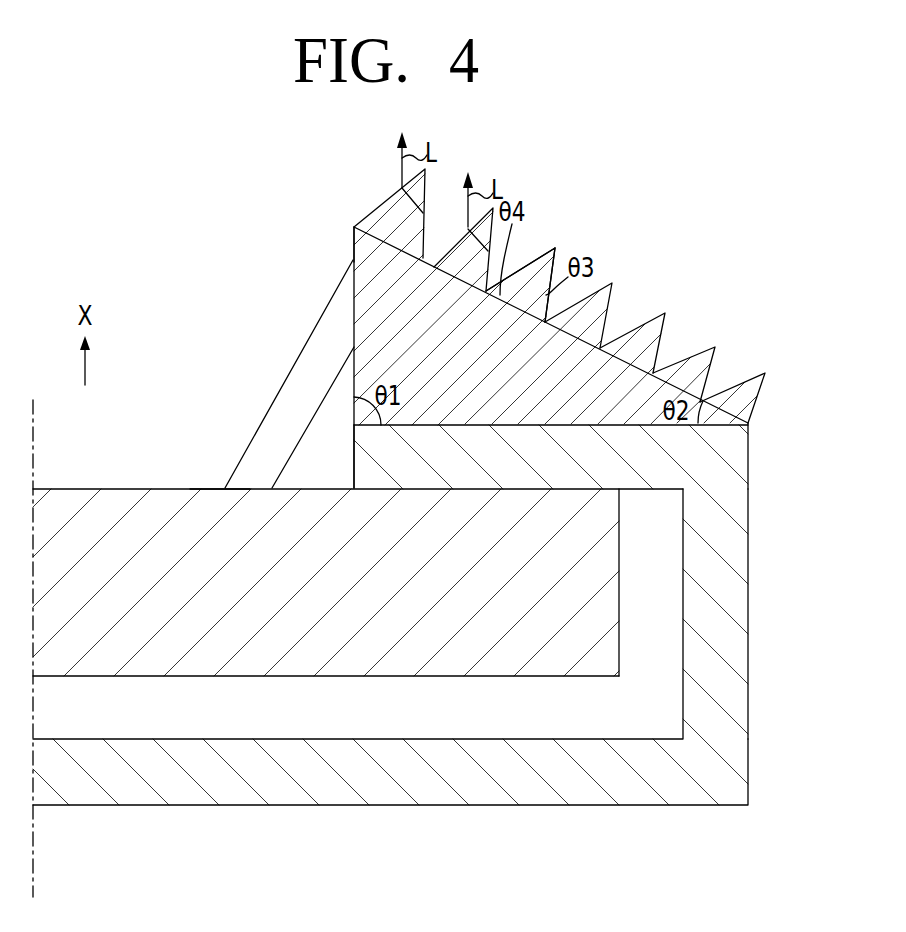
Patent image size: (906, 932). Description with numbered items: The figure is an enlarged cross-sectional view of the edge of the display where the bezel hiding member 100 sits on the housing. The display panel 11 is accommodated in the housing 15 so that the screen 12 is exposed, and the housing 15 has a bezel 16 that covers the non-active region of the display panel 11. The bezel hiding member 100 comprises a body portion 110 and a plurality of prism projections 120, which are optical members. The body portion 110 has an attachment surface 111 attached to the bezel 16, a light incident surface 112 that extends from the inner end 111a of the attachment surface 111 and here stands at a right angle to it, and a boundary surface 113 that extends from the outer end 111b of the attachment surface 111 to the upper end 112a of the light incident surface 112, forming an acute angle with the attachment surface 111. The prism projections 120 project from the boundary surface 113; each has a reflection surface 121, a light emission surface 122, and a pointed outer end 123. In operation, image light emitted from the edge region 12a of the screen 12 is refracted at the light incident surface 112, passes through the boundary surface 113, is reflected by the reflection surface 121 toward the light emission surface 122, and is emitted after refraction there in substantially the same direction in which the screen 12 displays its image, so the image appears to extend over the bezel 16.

The bezel hiding member 100 is at (337, 323).
The body portion 110 is at (667, 377).
The attachment surface 111 is at (663, 425).
The inner end of the attachment surface 111a is at (351, 425).
The outer end of the attachment surface 111b is at (748, 423).
The light incident surface 112 is at (353, 370).
The upper end of the light incident surface 112a is at (354, 227).
The boundary surface 113 is at (662, 340).
The prism projections 120 is at (610, 297).
The reflection surface 121 is at (555, 270).
The light emission surface 122 is at (528, 262).
The pointed outer end 123 is at (556, 280).
The display panel 11 is at (301, 672).
The screen 12 is at (46, 487).
The edge region of the screen 12a is at (215, 487).
The housing 15 is at (431, 806).
The bezel 16 is at (603, 460).